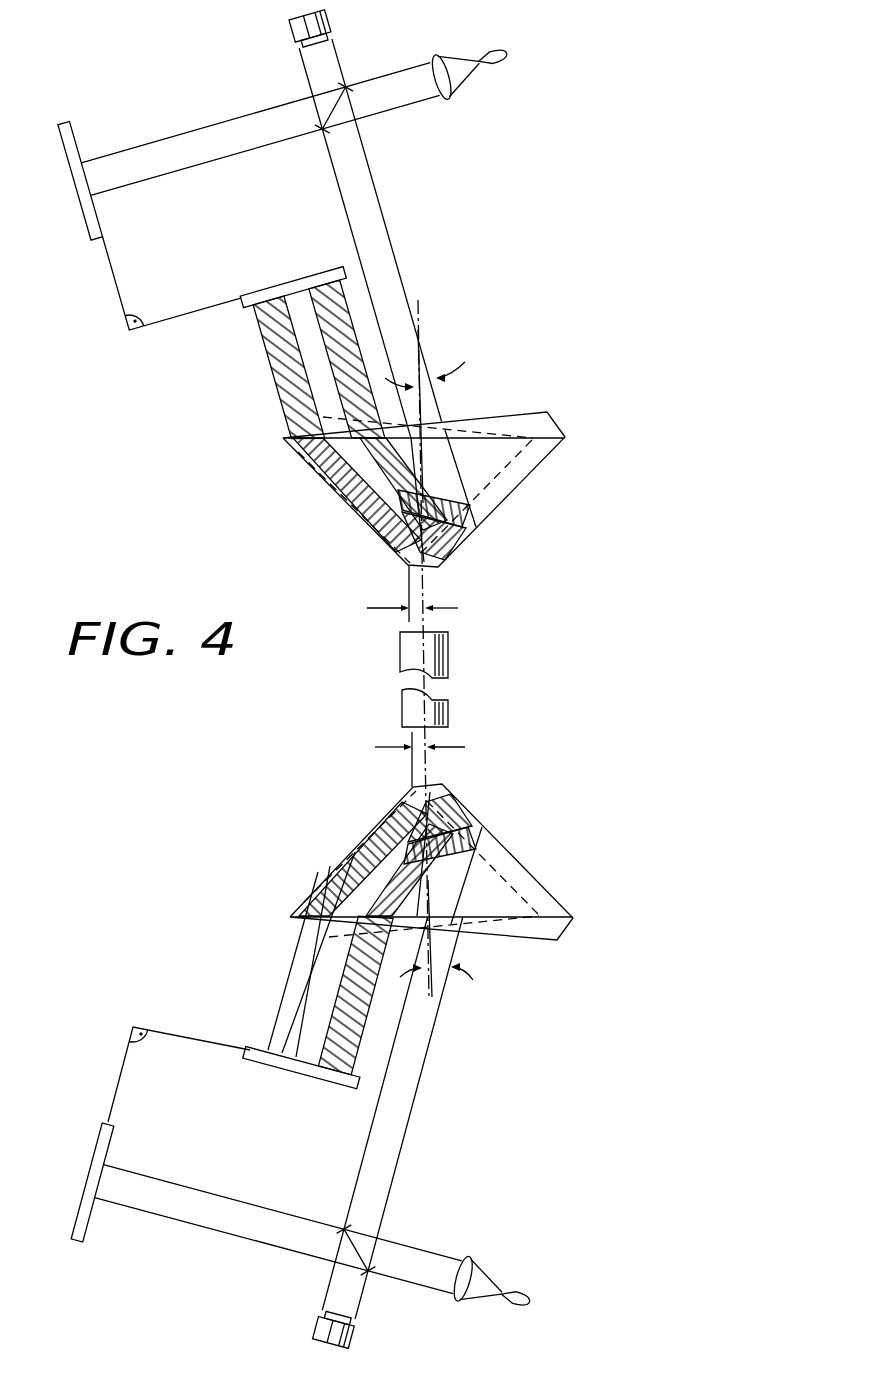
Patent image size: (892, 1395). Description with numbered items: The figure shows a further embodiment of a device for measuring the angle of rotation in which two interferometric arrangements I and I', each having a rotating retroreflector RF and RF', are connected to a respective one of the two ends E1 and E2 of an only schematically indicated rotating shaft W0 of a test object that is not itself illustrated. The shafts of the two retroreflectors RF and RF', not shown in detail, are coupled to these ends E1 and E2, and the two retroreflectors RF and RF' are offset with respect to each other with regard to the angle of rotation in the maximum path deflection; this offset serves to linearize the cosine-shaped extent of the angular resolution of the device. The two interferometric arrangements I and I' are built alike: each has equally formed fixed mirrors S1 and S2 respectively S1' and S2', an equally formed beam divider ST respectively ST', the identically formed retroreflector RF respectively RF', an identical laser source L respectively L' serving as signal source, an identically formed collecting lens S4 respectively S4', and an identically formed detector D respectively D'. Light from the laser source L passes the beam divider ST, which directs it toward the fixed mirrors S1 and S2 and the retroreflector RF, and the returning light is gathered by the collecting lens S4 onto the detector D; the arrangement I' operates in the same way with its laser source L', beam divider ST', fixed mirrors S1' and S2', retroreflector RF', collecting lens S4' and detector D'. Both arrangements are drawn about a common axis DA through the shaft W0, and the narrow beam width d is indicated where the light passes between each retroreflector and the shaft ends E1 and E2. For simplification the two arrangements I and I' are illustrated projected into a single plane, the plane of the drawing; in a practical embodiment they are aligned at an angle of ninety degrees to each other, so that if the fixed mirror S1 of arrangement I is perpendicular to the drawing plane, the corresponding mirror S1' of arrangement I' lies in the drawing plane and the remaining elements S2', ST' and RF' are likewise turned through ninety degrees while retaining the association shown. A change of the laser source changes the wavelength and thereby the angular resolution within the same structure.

The interferometric arrangement I' is at (352, 259).
The laser source L' is at (343, 25).
The beam divider ST' is at (305, 101).
The fixed mirror S1' is at (101, 163).
The fixed mirror S2' is at (315, 347).
The lens S4' is at (458, 103).
The detector D' is at (529, 48).
The retroreflector RF' is at (454, 466).
The rotation axis DA is at (432, 775).
The beam spacing d is at (417, 596).
The end of rotating shaft E1 is at (433, 631).
The rotating shaft W0 is at (448, 677).
The end of rotating shaft E2 is at (402, 726).
The interferometric arrangement I is at (315, 1093).
The laser source L is at (366, 1335).
The beam divider ST is at (385, 1238).
The fixed mirror S1 is at (69, 1182).
The fixed mirror S2 is at (322, 992).
The lens S4 is at (493, 1274).
The detector D is at (539, 1291).
The retroreflector RF is at (459, 862).